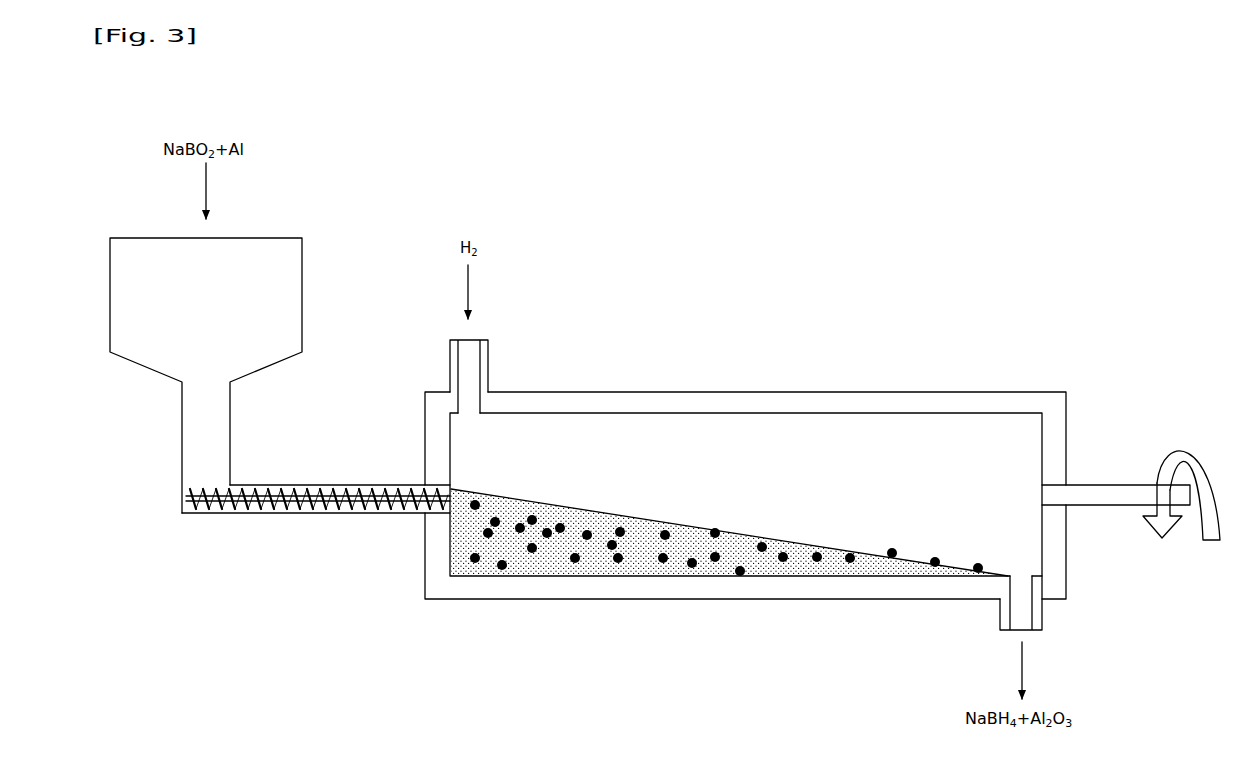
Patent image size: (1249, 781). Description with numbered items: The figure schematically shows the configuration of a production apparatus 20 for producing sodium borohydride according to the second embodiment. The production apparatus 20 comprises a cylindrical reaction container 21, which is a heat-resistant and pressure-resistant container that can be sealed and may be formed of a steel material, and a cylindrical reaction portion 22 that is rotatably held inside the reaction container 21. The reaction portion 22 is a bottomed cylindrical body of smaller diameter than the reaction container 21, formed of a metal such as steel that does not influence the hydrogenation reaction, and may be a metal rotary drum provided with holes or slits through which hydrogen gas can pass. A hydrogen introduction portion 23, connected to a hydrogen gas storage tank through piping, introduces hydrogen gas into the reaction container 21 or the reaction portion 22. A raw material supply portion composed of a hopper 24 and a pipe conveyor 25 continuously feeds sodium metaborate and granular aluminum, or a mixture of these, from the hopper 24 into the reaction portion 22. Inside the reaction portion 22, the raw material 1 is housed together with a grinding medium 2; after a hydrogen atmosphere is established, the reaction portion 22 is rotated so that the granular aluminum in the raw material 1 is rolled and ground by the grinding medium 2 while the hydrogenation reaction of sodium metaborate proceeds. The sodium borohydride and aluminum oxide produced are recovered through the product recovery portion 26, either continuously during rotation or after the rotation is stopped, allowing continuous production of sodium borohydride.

The raw material 1 is at (790, 568).
The grinding medium 2 is at (574, 556).
The production apparatus 20 is at (1063, 282).
The reaction container 21 is at (628, 392).
The reaction portion 22 is at (826, 410).
The hydrogen introduction portion 23 is at (488, 352).
The hopper 24 is at (302, 263).
The pipe conveyor 25 is at (301, 485).
The product recovery portion 26 is at (1045, 617).